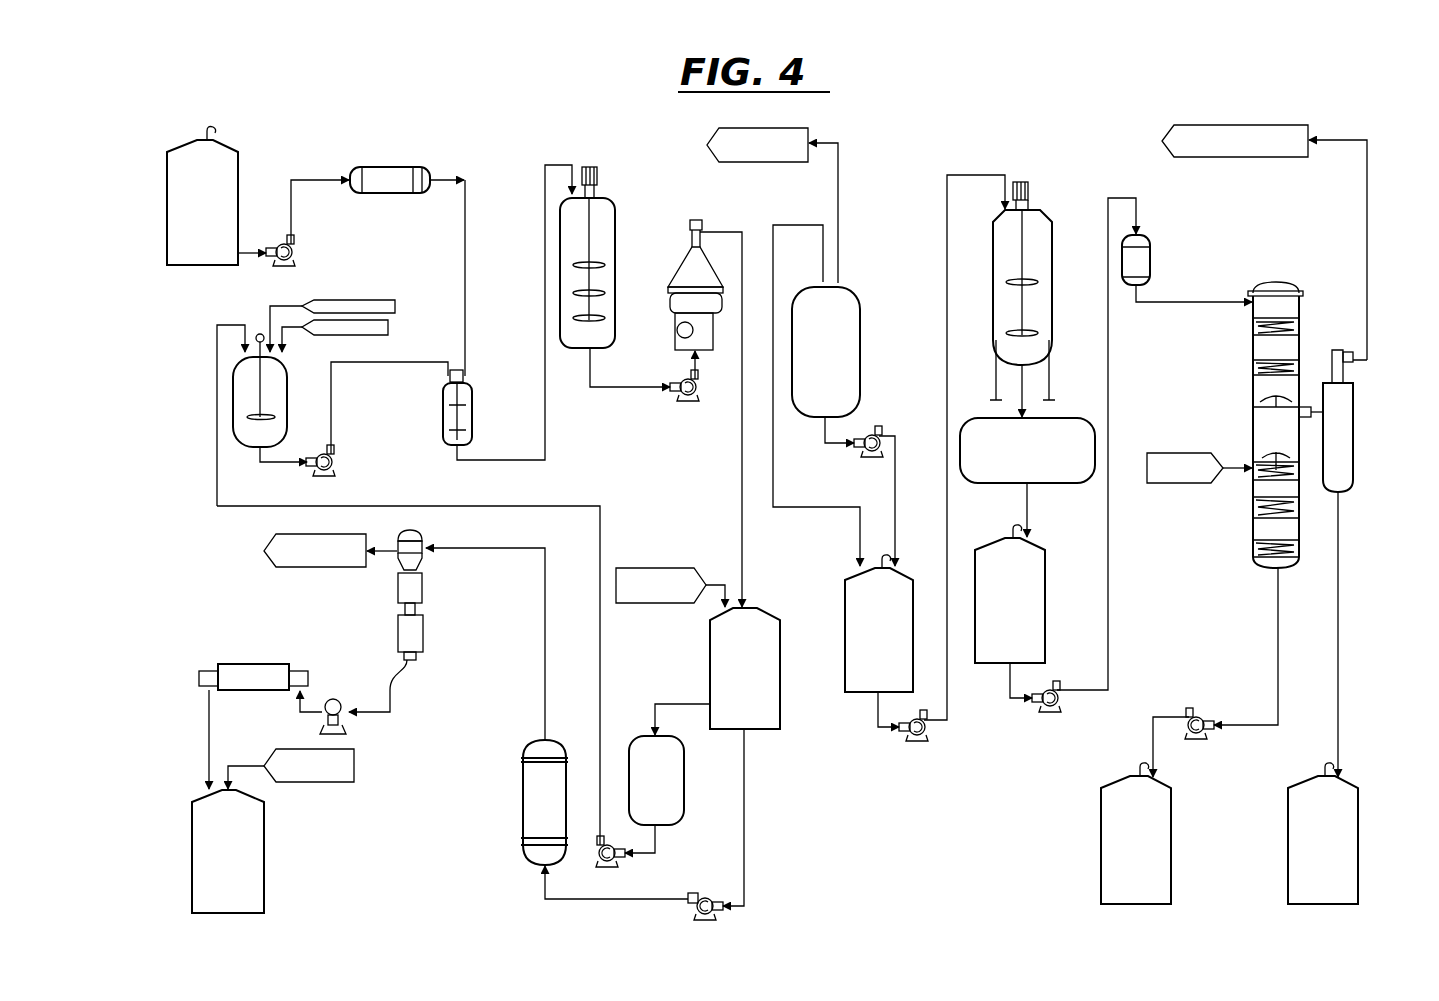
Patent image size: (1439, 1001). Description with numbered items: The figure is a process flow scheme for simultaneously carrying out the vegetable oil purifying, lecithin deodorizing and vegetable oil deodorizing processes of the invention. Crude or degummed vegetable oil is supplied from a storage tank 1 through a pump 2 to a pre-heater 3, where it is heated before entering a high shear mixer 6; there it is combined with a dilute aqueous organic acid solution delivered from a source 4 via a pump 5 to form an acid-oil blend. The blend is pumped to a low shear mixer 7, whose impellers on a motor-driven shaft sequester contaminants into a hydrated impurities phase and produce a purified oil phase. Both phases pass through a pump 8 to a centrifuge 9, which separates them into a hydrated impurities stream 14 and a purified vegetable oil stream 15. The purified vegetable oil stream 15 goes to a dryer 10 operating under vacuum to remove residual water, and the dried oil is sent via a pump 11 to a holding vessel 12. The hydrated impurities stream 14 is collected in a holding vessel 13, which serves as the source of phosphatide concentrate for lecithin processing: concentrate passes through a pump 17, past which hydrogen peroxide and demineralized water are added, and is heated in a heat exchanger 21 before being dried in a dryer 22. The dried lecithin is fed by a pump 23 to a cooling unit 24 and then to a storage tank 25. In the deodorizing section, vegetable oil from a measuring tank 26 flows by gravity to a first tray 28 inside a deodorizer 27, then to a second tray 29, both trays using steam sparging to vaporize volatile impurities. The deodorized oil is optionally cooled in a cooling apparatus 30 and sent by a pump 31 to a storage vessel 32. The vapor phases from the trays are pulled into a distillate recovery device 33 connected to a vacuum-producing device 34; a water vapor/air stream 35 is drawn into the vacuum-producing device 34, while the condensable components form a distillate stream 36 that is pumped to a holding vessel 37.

The storage tank 1 is at (198, 208).
The pump 2 is at (300, 251).
The pre-heater 3 is at (392, 168).
The source 4 is at (253, 393).
The pump 5 is at (341, 462).
The high shear mixer 6 is at (443, 420).
The low shear mixer 7 is at (618, 233).
The pump 8 is at (680, 402).
The centrifuge 9 is at (690, 270).
The dryer 10 is at (862, 360).
The pump 11 is at (873, 432).
The holding vessel 12 is at (866, 643).
The holding vessel 13 is at (762, 690).
The hydrated impurities stream 14 is at (742, 483).
The purified vegetable oil stream 15 is at (800, 223).
The pump 17 is at (702, 890).
The heat exchanger 21 is at (540, 811).
The dryer 22 is at (430, 590).
The pump 23 is at (338, 696).
The cooling unit 24 is at (253, 677).
The storage tank 25 is at (250, 845).
The measuring tank 26 is at (1150, 262).
The deodorizer 27 is at (1290, 414).
The first tray 28 is at (1302, 343).
The second tray 29 is at (1247, 442).
The cooling apparatus 30 is at (1303, 540).
The pump 31 is at (1192, 708).
The storage vessel 32 is at (1120, 870).
The distillate recovery device 33 is at (1357, 415).
The vacuum-producing device 34 is at (1235, 157).
The water vapor/air stream 35 is at (1366, 228).
The distillate stream 36 is at (1340, 690).
The holding vessel 37 is at (1320, 843).